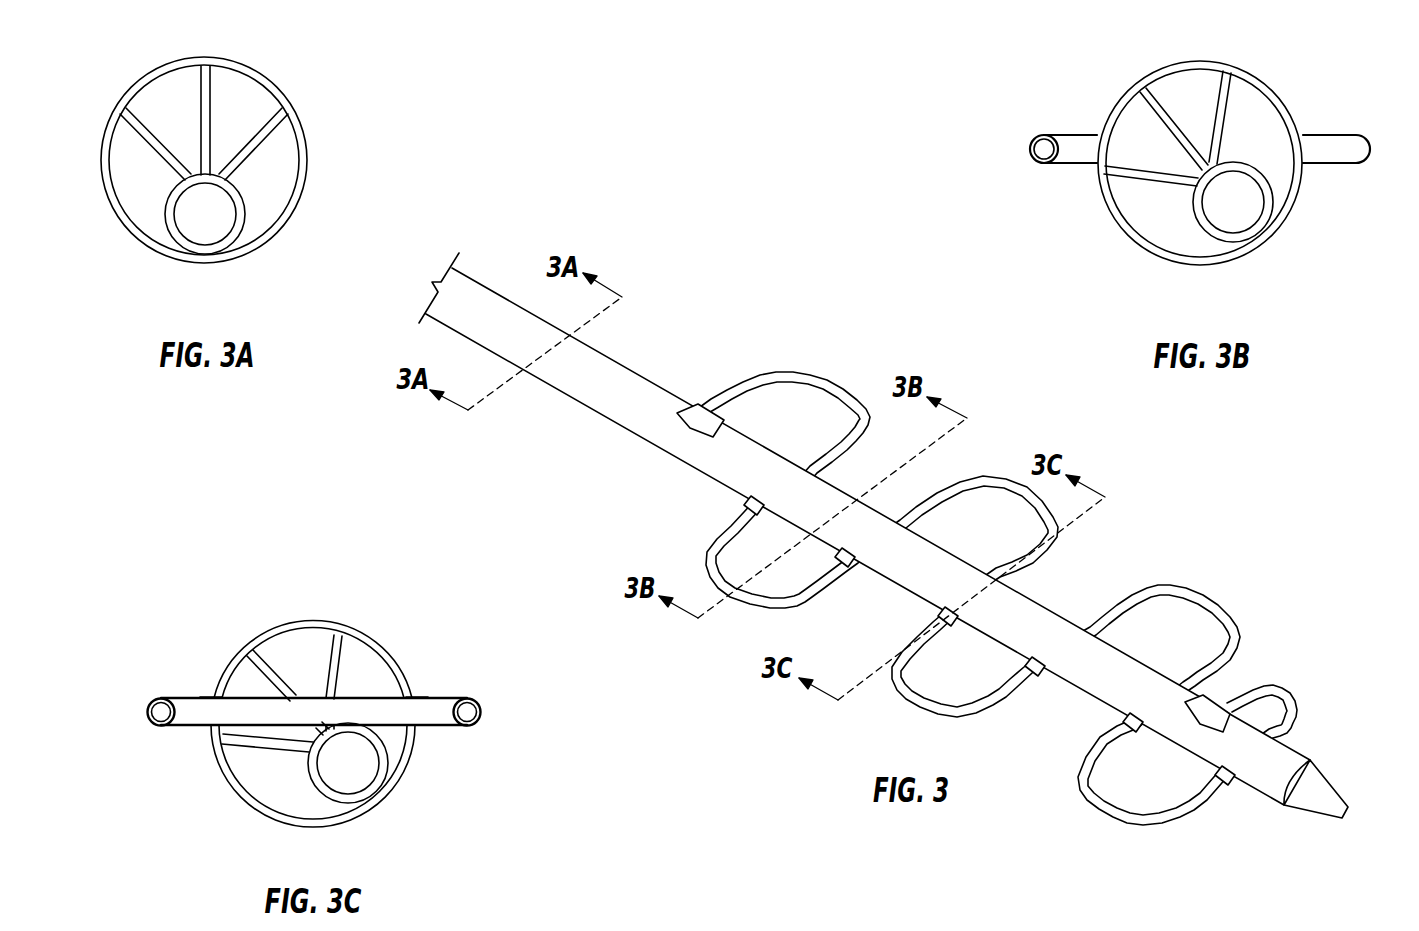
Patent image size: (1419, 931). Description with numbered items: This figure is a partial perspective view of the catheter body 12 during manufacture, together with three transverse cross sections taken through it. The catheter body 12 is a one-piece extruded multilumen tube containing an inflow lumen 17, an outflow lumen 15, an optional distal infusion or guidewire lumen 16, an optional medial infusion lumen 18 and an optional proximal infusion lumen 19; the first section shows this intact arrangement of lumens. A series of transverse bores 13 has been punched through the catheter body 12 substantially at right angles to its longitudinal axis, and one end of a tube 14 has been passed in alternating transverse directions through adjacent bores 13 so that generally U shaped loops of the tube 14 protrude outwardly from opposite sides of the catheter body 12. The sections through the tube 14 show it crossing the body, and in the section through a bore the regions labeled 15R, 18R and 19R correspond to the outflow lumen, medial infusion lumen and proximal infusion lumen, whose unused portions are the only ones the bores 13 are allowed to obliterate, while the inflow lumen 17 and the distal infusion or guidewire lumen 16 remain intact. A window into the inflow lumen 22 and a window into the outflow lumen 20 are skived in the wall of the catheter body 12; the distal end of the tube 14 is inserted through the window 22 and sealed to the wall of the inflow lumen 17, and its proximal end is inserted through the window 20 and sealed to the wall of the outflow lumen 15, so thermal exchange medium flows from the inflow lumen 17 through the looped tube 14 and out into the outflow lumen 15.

In FIG. 3, the catheter body 12 is at (608, 358).
In FIG. 3A, the catheter body 12 is at (308, 172).
In FIG. 3, the transverse bores 13 is at (838, 558).
In FIG. 3C, the transverse bores 13 is at (420, 693).
In FIG. 3, the tube 14 is at (823, 380).
In FIG. 3B, the tube 14 is at (1033, 147).
In FIG. 3C, the tube 14 is at (470, 730).
In FIG. 3A, the outflow lumen 15 is at (272, 207).
In FIG. 3B, the outflow lumen 15 is at (1263, 125).
In FIG. 3C, the lumen compartment 15R is at (363, 658).
In FIG. 3A, the distal infusion or guidewire lumen 16 is at (203, 230).
In FIG. 3B, the distal infusion or guidewire lumen 16 is at (1247, 218).
In FIG. 3C, the distal infusion or guidewire lumen 16 is at (358, 777).
In FIG. 3A, the inflow lumen 17 is at (133, 208).
In FIG. 3B, the inflow lumen 17 is at (1140, 222).
In FIG. 3C, the inflow lumen 17 is at (250, 782).
In FIG. 3A, the medial infusion lumen 18 is at (168, 97).
In FIG. 3B, the medial infusion lumen 18 is at (1130, 130).
In FIG. 3C, the lumen compartment 18R is at (233, 685).
In FIG. 3A, the proximal infusion lumen 19 is at (237, 97).
In FIG. 3B, the proximal infusion lumen 19 is at (1190, 90).
In FIG. 3C, the lumen compartment 19R is at (317, 638).
In FIG. 3, the window into the outflow lumen 20 is at (697, 430).
In FIG. 3, the window into the inflow lumen 22 is at (1220, 722).